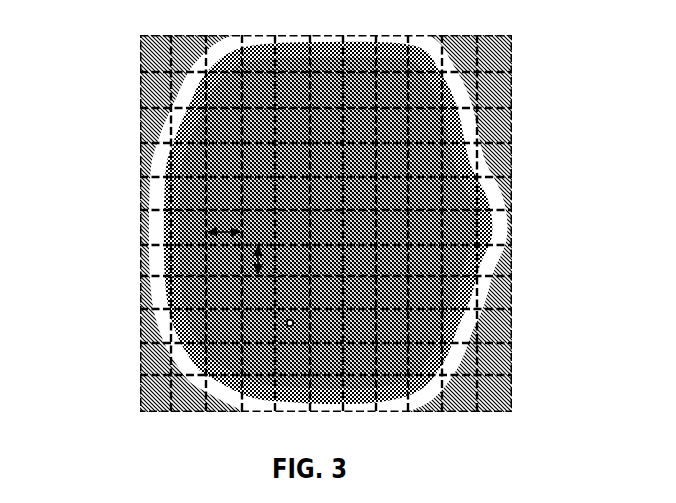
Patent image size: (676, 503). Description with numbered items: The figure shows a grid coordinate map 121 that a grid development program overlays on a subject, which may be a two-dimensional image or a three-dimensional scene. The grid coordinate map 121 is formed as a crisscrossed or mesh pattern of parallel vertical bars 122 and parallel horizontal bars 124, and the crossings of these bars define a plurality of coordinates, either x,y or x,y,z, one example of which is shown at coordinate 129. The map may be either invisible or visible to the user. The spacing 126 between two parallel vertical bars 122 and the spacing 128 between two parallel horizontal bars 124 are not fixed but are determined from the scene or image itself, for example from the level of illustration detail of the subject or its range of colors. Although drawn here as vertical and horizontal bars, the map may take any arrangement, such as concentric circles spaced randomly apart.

The grid coordinate map 121 is at (313, 212).
The parallel vertical bars 122 is at (449, 221).
The parallel horizontal bars 124 is at (462, 284).
The spacing between two parallel vertical bars 126 is at (216, 216).
The spacing between two parallel horizontal bars 128 is at (243, 262).
The coordinate 129 is at (270, 324).